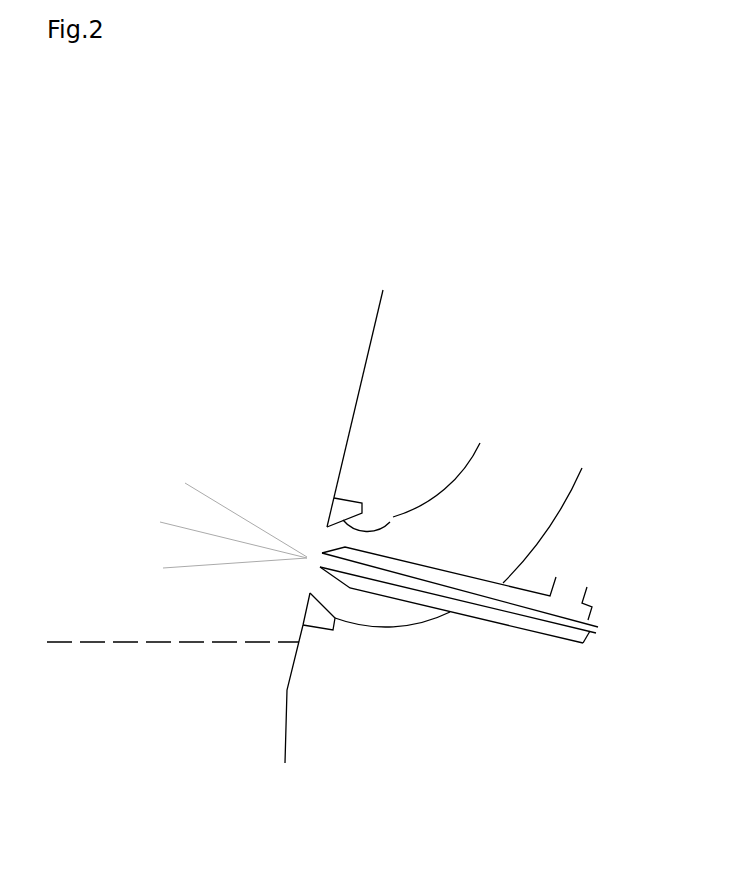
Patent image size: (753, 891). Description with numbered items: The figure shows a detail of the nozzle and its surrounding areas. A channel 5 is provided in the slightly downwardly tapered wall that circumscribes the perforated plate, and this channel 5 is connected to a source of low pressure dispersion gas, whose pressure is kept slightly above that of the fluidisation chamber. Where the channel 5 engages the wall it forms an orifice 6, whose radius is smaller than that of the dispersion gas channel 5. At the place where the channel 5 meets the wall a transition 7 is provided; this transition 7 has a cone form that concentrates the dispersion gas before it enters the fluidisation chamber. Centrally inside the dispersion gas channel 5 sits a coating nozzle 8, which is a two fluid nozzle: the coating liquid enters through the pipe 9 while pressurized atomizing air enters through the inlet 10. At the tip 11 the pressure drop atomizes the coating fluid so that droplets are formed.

The channel 5 is at (573, 512).
The orifice 6 is at (323, 520).
The transition 7 is at (392, 518).
The coating nozzle 8 is at (457, 625).
The pipe 9 is at (598, 636).
The inlet 10 is at (577, 577).
The tip 11 is at (320, 567).